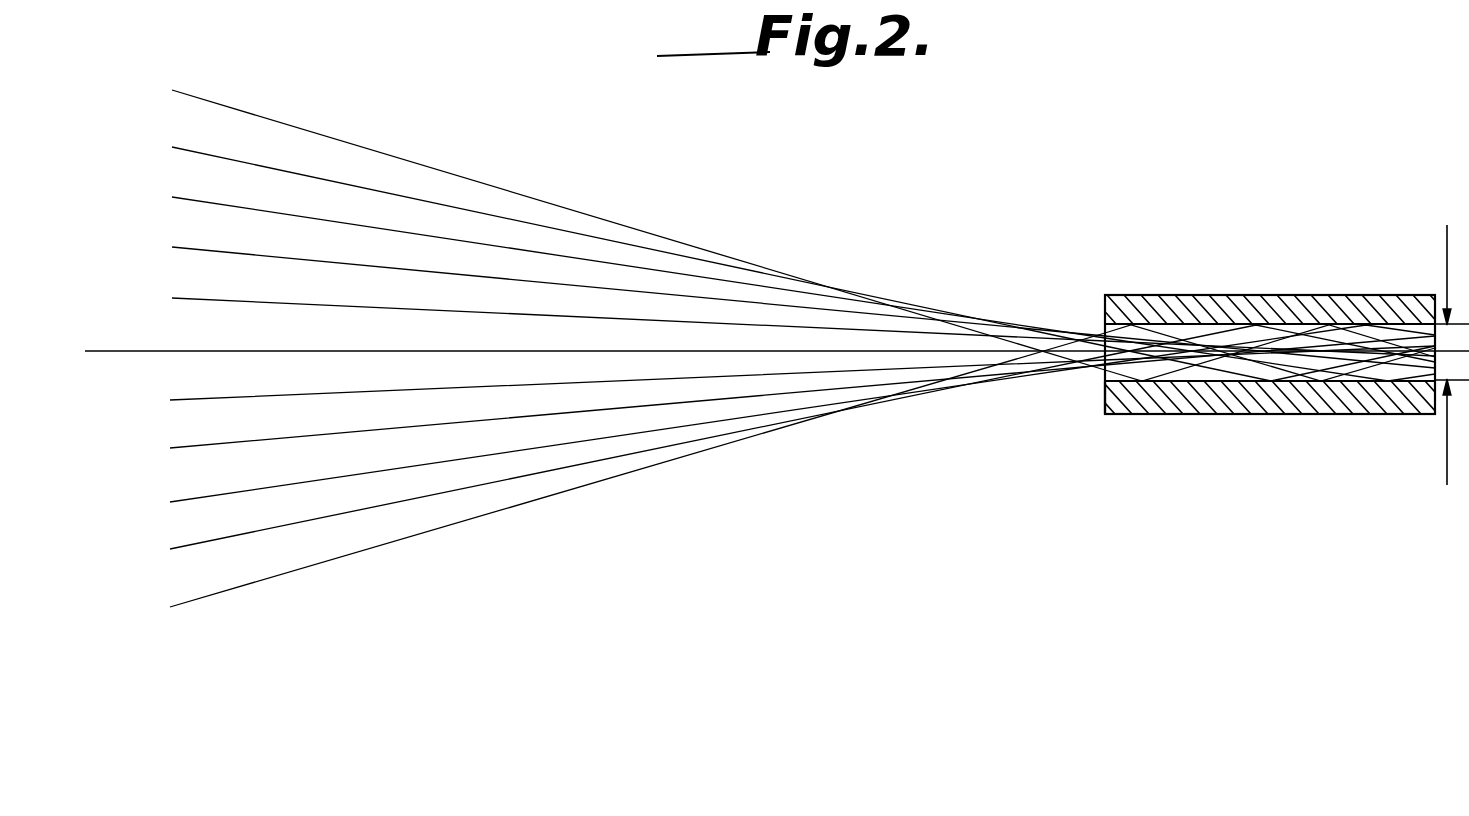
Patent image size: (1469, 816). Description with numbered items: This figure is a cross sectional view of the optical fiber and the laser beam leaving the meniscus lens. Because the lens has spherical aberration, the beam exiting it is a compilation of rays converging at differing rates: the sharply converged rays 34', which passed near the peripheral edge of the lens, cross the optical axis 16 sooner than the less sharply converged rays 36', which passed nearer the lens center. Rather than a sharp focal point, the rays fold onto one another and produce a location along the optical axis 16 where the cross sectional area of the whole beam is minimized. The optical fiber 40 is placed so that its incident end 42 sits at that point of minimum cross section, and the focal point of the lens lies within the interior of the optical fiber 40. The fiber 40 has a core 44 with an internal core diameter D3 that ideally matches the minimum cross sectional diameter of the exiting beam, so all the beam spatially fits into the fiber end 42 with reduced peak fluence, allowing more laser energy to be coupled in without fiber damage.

The optical axis 16 is at (142, 328).
The sharply converged rays 34' is at (803, 235).
The less sharply converged rays 36' is at (803, 264).
The optical fiber 40 is at (1235, 293).
The incident end of optical fiber 42 is at (1105, 396).
The core 44 is at (1168, 362).
The internal core diameter D3 is at (1447, 264).